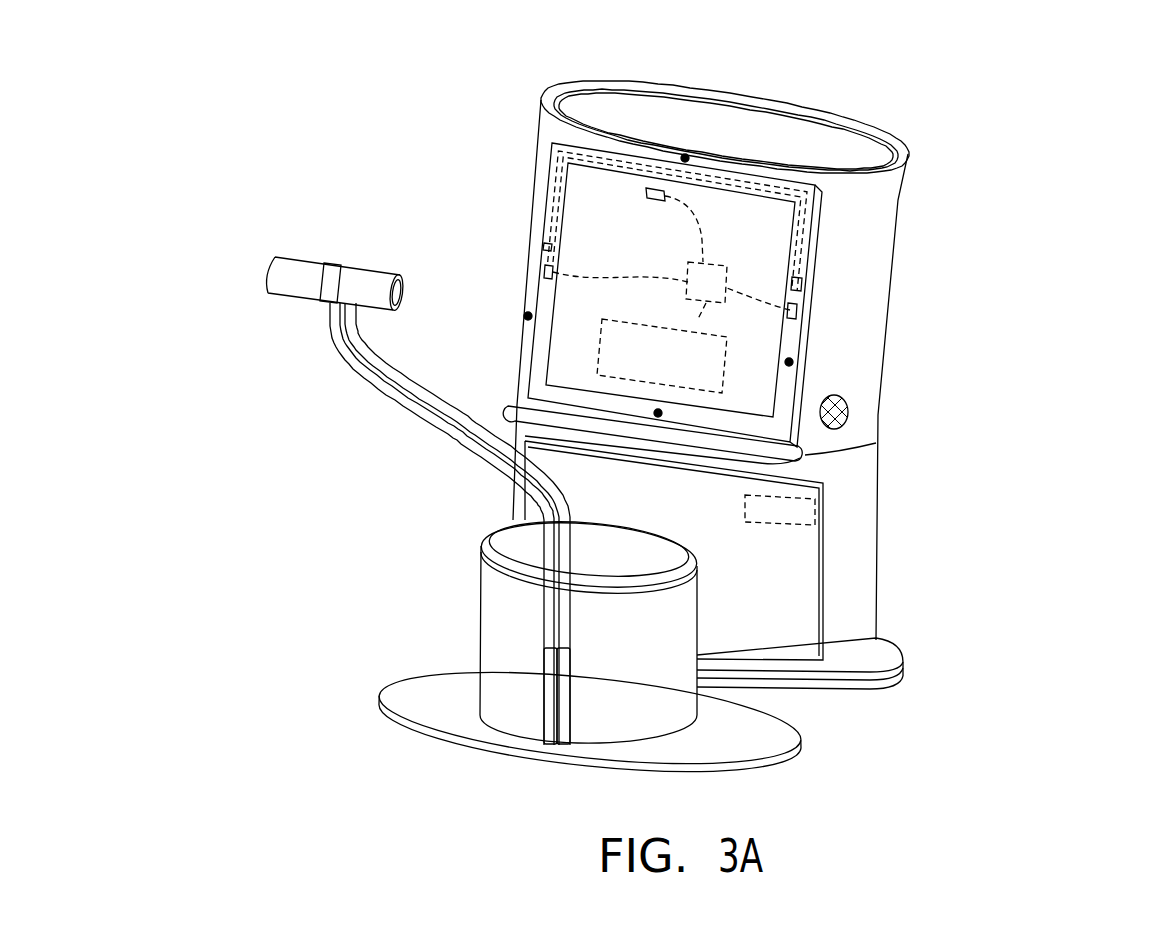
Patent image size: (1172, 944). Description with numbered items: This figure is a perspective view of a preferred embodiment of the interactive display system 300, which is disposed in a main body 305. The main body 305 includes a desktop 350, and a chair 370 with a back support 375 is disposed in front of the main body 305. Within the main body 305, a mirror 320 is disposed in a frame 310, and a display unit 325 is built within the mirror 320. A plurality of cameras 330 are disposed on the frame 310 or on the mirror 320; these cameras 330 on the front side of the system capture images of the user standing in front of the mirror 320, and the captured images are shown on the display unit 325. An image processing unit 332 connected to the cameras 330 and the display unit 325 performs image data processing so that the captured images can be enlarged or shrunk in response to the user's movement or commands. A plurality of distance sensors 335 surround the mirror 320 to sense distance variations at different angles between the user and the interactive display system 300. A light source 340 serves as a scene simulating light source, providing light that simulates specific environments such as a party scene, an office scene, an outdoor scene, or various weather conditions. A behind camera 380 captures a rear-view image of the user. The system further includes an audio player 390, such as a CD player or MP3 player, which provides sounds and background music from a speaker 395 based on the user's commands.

The interactive display system 300 is at (1144, 699).
The main body 305 is at (890, 180).
The frame 310 is at (817, 247).
The mirror 320 is at (760, 396).
The display unit 325 is at (600, 352).
The cameras 330 is at (660, 187).
The image processing unit 332 is at (727, 266).
The distance sensors 335 is at (688, 158).
The light source 340 is at (548, 210).
The desktop 350 is at (792, 466).
The chair 370 is at (660, 550).
The back support 375 is at (268, 268).
The behind camera 380 is at (333, 266).
The audio player 390 is at (815, 507).
The speaker 395 is at (847, 421).